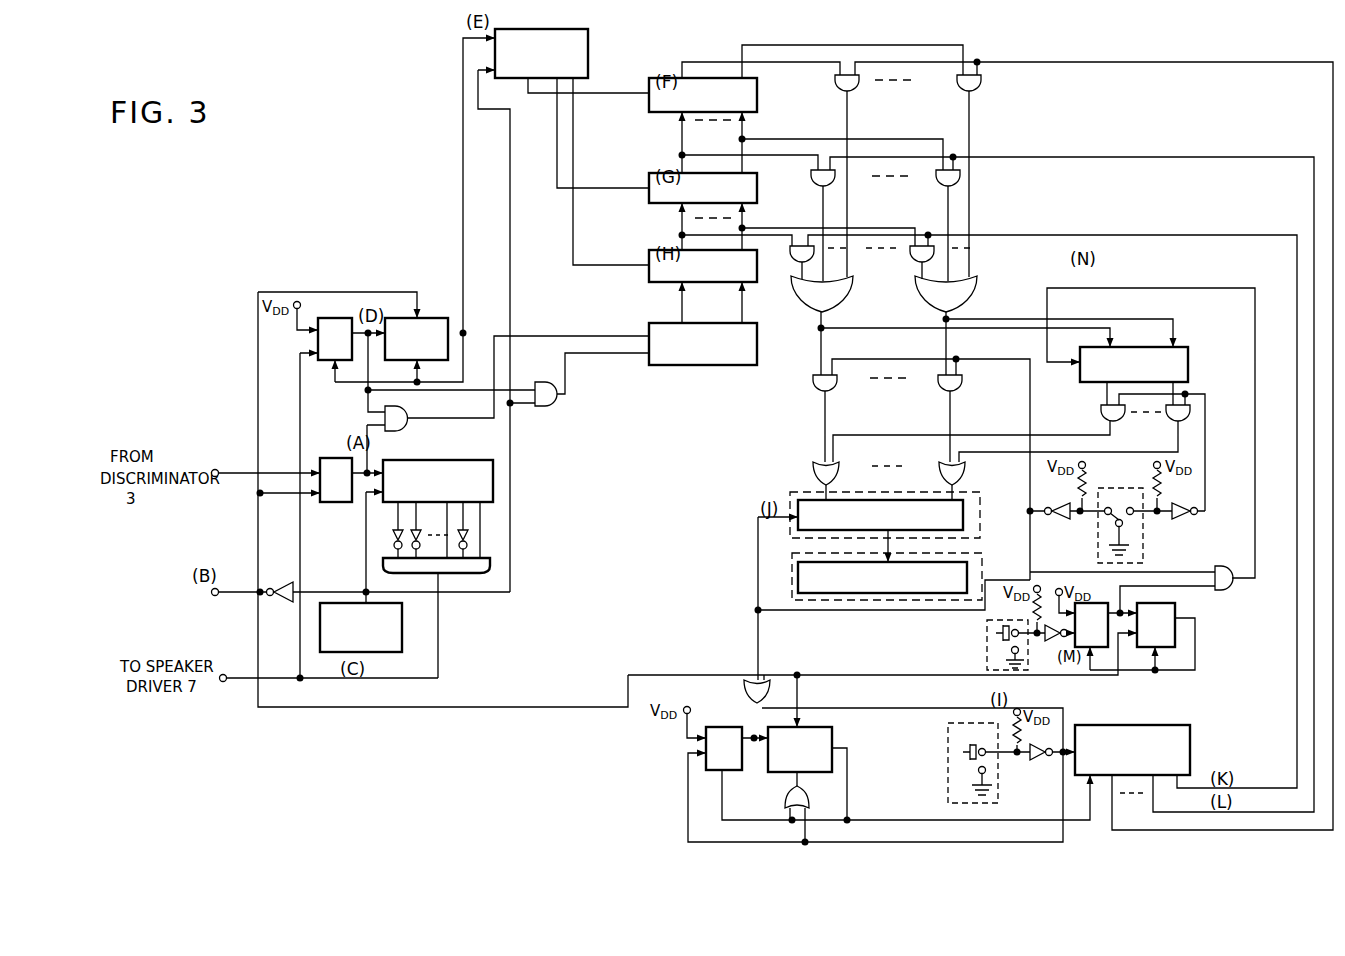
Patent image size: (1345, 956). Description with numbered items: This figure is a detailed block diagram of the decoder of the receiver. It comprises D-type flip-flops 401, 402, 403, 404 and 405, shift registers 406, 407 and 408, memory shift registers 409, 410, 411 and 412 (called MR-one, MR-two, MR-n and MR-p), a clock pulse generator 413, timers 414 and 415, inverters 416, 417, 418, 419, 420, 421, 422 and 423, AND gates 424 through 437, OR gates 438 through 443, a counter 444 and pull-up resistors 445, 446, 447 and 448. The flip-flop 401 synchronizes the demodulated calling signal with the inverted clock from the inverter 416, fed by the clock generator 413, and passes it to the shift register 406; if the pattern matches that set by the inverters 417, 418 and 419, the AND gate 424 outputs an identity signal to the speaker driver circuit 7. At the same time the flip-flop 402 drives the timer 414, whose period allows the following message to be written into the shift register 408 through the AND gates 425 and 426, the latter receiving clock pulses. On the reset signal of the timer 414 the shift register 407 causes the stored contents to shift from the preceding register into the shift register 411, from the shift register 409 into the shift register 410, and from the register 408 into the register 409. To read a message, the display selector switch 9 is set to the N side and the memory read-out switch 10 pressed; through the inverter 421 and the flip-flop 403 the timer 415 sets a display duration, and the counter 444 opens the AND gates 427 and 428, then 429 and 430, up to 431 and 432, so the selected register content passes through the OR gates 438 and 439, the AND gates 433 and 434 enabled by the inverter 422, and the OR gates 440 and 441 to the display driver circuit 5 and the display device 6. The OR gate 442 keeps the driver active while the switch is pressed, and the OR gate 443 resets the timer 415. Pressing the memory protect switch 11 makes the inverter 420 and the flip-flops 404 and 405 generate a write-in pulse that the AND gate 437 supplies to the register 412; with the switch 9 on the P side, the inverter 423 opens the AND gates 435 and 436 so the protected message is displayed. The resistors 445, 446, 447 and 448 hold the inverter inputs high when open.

The D-type flip-flop 401 is at (334, 502).
The D-type flip-flop 402 is at (341, 318).
The D-type flip-flop 403 is at (733, 727).
The D-type flip-flop 404 is at (1095, 603).
The D-type flip-flop 405 is at (1175, 607).
The shift register 406 is at (435, 460).
The shift register 407 is at (516, 78).
The shift register 408 is at (700, 366).
The shift register MR-1 409 is at (660, 282).
The shift register MR-2 410 is at (660, 203).
The shift register MR-n 411 is at (665, 112).
The shift register MR-p 412 is at (1190, 354).
The clock pulse generator 413 is at (402, 628).
The timer 414 is at (437, 318).
The timer 415 is at (832, 744).
The inverter 416 is at (283, 602).
The inverter 417 is at (396, 543).
The inverter 418 is at (398, 530).
The inverter 419 is at (467, 540).
The inverter 420 is at (1050, 648).
The inverter 421 is at (1050, 746).
The inverter 422 is at (1060, 520).
The inverter 423 is at (1182, 520).
The AND gate 424 is at (460, 573).
The AND gate 425 is at (396, 431).
The AND gate 426 is at (548, 407).
The AND gate 427 is at (789, 258).
The AND gate 428 is at (908, 258).
The AND gate 429 is at (808, 185).
The AND gate 430 is at (935, 185).
The AND gate 431 is at (835, 88).
The AND gate 432 is at (982, 85).
The AND gate 433 is at (813, 390).
The AND gate 434 is at (938, 390).
The AND gate 435 is at (1100, 414).
The AND gate 436 is at (1190, 416).
The AND gate 437 is at (1232, 590).
The OR gate 438 is at (813, 307).
The OR gate 439 is at (932, 307).
The OR gate 440 is at (813, 467).
The OR gate 441 is at (942, 467).
The OR gate 442 is at (768, 686).
The OR gate 443 is at (785, 800).
The counter 444 is at (1190, 735).
The pull-up resistor 445 is at (1024, 612).
The pull-up resistor 446 is at (1011, 719).
The pull-up resistor 447 is at (1077, 494).
The pull-up resistor 448 is at (1151, 486).
The display driver circuit 5 is at (982, 538).
The display device 6 is at (910, 612).
The speaker driver circuit 7 is at (882, 586).
The display selector switch 9 is at (1143, 527).
The memory read-out switch 10 is at (947, 784).
The memory protect switch 11 is at (985, 650).